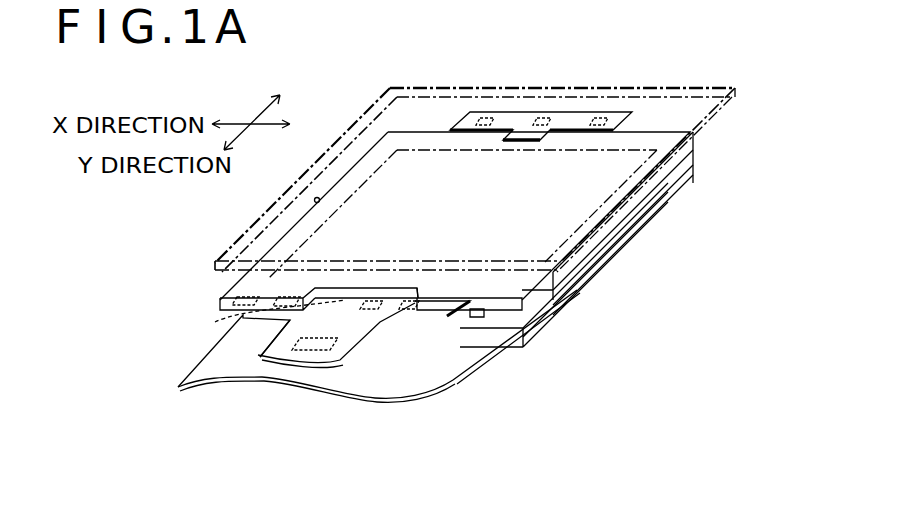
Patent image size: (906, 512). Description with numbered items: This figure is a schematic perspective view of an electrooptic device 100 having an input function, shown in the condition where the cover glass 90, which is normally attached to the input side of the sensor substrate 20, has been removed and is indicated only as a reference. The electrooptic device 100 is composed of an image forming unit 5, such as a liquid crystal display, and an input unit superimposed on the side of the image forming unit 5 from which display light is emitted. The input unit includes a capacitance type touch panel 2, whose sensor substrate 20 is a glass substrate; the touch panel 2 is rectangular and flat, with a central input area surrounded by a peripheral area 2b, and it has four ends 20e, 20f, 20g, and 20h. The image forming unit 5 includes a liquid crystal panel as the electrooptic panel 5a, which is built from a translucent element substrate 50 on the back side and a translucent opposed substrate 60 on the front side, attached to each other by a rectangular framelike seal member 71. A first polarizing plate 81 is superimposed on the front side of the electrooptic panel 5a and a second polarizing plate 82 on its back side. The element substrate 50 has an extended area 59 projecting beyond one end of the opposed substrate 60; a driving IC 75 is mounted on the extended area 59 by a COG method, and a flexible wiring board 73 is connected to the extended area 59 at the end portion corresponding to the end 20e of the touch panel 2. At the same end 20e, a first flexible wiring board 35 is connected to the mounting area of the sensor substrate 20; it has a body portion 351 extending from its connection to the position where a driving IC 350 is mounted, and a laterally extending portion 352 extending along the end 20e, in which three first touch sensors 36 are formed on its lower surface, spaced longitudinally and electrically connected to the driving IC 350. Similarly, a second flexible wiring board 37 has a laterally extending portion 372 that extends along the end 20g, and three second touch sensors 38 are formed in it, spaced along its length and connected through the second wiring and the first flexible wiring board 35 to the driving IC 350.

The electrooptic device 100 is at (340, 95).
The touch panel 2 is at (665, 128).
The peripheral area 2b is at (330, 186).
The sensor substrate 20 is at (640, 187).
The end 20e is at (437, 298).
The end 20f is at (584, 230).
The end 20g is at (423, 132).
The end 20h is at (317, 200).
The first flexible wiring board 35 is at (373, 340).
The driving IC 350 is at (335, 345).
The body portion 351 is at (260, 360).
The laterally extending portion 352 is at (393, 362).
The first touch sensors 36 is at (240, 312).
The second flexible wiring board 37 is at (560, 112).
The laterally extending portion 372 is at (483, 110).
The second touch sensors 38 is at (603, 116).
The image forming unit 5 is at (766, 238).
The electrooptic panel 5a is at (737, 146).
The element substrate 50 is at (663, 200).
The extended area 59 is at (535, 312).
The opposed substrate 60 is at (672, 172).
The seal member 71 is at (673, 188).
The flexible wiring board 73 is at (292, 378).
The driving IC 75 is at (460, 318).
The first polarizing plate 81 is at (695, 136).
The second polarizing plate 82 is at (657, 225).
The cover glass 90 is at (735, 86).